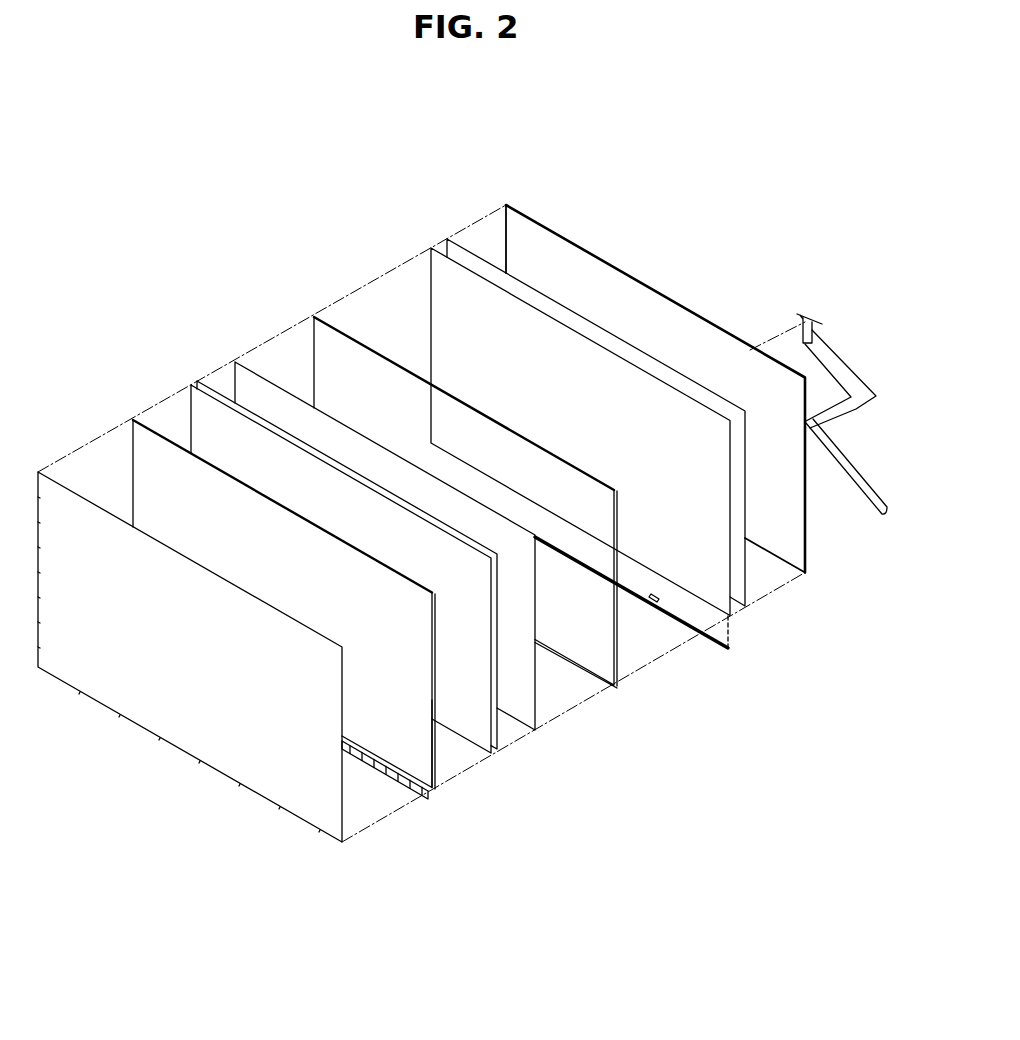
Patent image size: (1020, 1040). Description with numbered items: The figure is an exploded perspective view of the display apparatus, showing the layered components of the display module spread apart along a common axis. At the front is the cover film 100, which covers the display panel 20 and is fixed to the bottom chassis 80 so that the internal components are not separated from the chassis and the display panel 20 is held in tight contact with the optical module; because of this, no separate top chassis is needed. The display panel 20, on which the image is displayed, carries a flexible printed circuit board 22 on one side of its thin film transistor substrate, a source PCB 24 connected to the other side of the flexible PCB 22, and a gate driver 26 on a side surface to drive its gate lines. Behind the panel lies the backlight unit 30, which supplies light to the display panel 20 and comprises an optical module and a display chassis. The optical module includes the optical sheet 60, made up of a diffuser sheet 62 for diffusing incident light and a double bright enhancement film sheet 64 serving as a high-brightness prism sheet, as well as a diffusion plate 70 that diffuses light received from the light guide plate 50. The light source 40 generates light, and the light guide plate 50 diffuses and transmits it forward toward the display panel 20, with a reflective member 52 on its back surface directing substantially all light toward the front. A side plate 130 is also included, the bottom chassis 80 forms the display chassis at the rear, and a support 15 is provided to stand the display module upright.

The support 15 is at (847, 364).
The display panel 20 is at (323, 654).
The flexible printed circuit board 22 is at (408, 788).
The source PCB 24 is at (398, 783).
The gate driver 26 is at (433, 749).
The backlight unit 30 is at (878, 680).
The light source 40 is at (716, 650).
The light guide plate 50 is at (732, 601).
The reflective member 52 is at (743, 578).
The optical sheet 60 is at (392, 613).
The diffuser sheet 62 is at (497, 739).
The double bright enhancement film sheet 64 is at (488, 742).
The diffusion plate 70 is at (532, 707).
The bottom chassis 80 is at (813, 573).
The cover film 100 is at (296, 806).
The side plate 130 is at (616, 667).